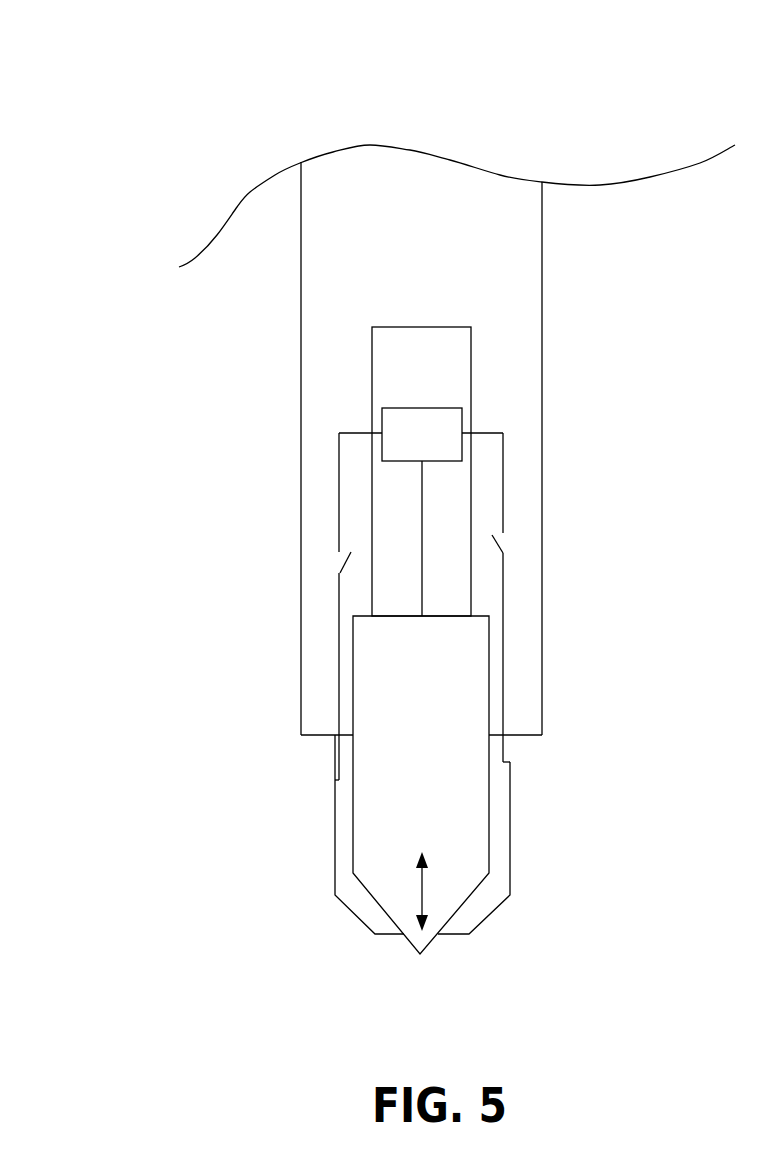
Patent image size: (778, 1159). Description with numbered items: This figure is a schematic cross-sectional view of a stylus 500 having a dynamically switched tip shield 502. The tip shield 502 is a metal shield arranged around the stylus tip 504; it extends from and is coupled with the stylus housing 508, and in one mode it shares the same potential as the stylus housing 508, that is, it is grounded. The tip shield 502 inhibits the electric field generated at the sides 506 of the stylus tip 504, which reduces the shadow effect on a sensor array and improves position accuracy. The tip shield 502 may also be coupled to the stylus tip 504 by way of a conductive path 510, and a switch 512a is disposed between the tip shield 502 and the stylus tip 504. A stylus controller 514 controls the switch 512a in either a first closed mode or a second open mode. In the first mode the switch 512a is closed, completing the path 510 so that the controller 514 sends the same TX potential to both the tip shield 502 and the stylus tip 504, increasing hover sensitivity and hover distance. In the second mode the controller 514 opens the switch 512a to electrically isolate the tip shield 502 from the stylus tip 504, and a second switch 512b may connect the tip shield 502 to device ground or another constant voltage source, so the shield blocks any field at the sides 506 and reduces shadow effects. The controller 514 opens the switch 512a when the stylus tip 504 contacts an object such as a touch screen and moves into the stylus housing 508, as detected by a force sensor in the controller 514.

The stylus 500 is at (142, 128).
The tip shield 502 is at (508, 895).
The stylus tip 504 is at (421, 640).
The sides of the stylus tip 506 is at (353, 852).
The stylus housing 508 is at (540, 692).
The conductive path 510 is at (503, 658).
The switch 512a is at (522, 540).
The second switch 512b is at (320, 560).
The stylus controller 514 is at (422, 434).